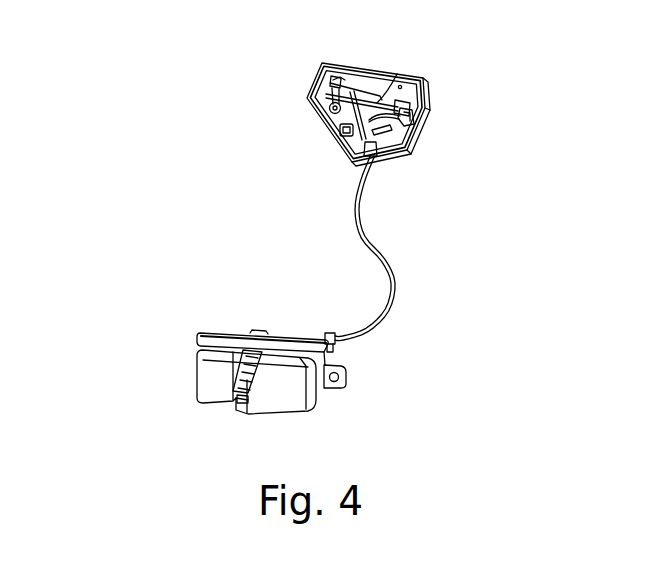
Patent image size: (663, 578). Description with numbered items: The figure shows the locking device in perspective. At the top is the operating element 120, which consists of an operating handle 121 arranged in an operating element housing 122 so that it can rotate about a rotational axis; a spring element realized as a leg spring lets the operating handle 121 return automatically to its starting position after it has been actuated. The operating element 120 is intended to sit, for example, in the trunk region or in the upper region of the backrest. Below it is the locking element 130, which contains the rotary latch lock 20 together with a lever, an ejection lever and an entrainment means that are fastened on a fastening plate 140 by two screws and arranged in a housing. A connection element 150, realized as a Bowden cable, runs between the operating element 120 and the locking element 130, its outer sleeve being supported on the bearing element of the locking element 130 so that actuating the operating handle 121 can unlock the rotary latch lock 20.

The operating element 120 is at (441, 72).
The operating handle 121 is at (377, 103).
The operating element housing 122 is at (420, 112).
The connection element 150 is at (381, 243).
The locking element 130 is at (178, 394).
The fastening plate 140 is at (346, 375).
The rotary latch lock 20 is at (234, 403).